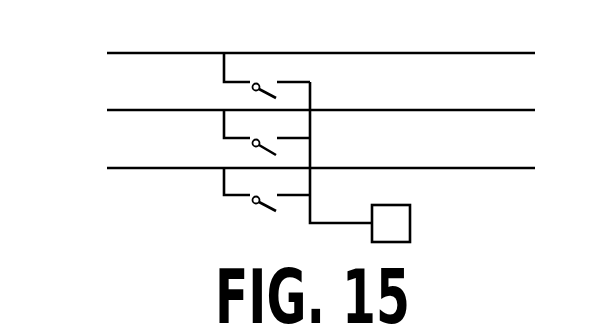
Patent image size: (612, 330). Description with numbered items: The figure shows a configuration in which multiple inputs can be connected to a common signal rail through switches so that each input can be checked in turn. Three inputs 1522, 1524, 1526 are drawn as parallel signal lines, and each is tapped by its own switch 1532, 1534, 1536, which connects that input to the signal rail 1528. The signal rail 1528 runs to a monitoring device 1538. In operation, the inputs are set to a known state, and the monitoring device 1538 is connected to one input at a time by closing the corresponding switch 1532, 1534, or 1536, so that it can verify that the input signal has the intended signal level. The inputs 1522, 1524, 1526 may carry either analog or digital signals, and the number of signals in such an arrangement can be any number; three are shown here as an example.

The input 1522 is at (93, 53).
The input 1524 is at (93, 110).
The input 1526 is at (93, 168).
The signal rail 1528 is at (326, 82).
The switch 1532 is at (252, 88).
The switch 1534 is at (252, 144).
The switch 1536 is at (252, 201).
The monitoring device 1538 is at (411, 221).